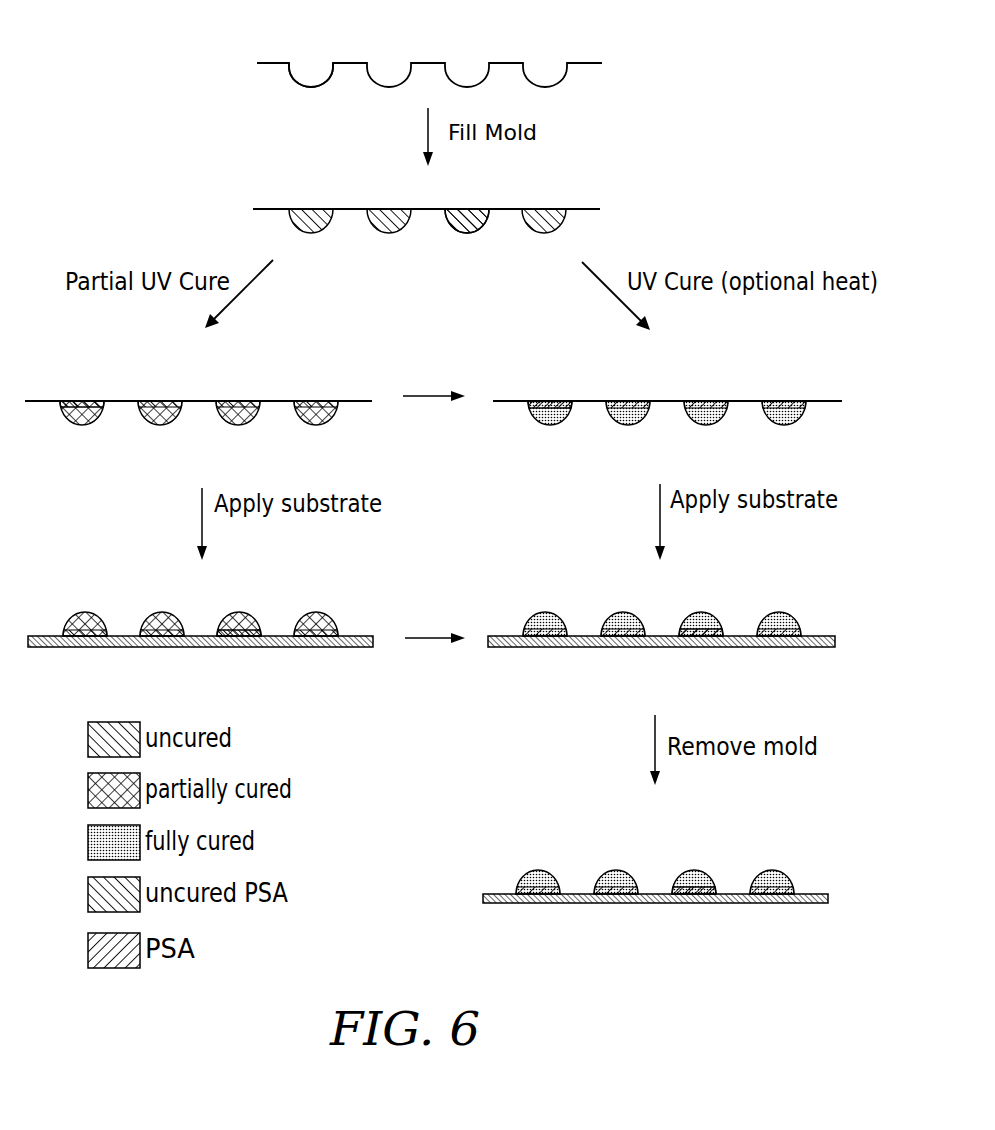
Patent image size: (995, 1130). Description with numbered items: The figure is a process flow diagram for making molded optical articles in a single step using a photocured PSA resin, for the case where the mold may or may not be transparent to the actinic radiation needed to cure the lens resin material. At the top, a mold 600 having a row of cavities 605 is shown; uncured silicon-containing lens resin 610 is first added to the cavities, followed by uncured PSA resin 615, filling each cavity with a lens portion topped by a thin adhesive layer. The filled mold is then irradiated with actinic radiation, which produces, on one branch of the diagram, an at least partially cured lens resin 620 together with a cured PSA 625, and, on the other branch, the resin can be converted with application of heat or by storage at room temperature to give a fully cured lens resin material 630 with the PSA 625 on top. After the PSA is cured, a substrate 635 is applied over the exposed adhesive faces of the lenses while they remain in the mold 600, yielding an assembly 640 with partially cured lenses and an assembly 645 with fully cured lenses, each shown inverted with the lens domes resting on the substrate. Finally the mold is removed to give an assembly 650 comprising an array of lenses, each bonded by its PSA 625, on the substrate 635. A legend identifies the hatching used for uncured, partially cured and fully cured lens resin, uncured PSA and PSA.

The mold 600 is at (584, 64).
The cavities 605 is at (315, 73).
The uncured silicon-containing lens resin 610 is at (463, 232).
The uncured PSA resin 615 is at (305, 212).
The at least partially cured lens resin 620 is at (224, 425).
The PSA 625 is at (71, 405).
The fully cured lens resin material 630 is at (696, 425).
The substrate 635 is at (347, 648).
The assembly 640 is at (65, 563).
The assembly 645 is at (501, 596).
The assembly 650 is at (513, 832).